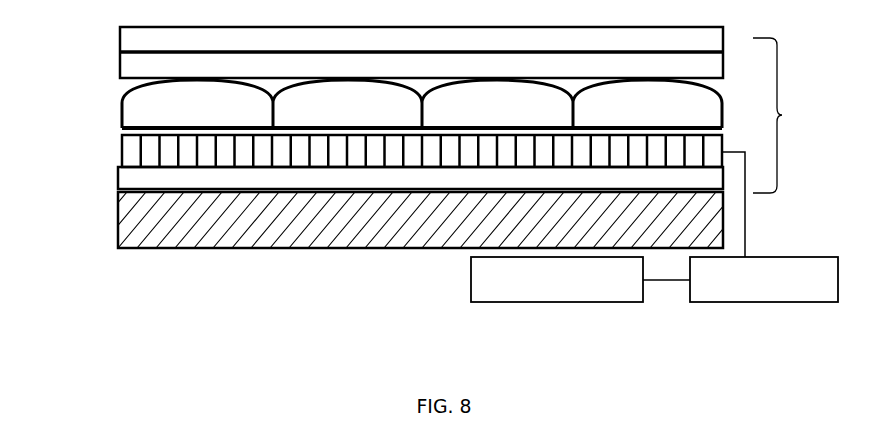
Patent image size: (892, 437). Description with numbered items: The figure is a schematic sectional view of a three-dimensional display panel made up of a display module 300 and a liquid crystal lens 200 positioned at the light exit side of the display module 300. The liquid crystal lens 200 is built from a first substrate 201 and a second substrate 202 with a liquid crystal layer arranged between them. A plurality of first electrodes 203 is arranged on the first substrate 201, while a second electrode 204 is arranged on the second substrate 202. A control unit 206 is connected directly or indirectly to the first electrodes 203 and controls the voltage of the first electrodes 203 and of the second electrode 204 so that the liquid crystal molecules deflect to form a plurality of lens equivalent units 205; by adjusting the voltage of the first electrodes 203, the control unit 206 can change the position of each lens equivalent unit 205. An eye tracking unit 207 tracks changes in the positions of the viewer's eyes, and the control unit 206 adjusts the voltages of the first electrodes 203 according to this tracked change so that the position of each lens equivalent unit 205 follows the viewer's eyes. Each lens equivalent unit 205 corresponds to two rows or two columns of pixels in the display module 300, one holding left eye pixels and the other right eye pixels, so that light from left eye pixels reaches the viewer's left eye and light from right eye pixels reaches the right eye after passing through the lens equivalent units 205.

The liquid crystal lens 200 is at (801, 115).
The first substrate 201 is at (118, 182).
The second substrate 202 is at (120, 38).
The first electrodes 203 is at (122, 147).
The second electrode 204 is at (120, 63).
The lens equivalent units 205 is at (122, 110).
The control unit 206 is at (773, 302).
The eye tracking unit 207 is at (554, 302).
The display module 300 is at (118, 228).